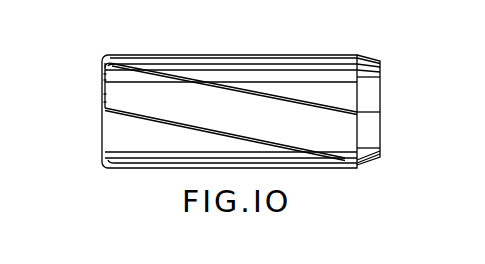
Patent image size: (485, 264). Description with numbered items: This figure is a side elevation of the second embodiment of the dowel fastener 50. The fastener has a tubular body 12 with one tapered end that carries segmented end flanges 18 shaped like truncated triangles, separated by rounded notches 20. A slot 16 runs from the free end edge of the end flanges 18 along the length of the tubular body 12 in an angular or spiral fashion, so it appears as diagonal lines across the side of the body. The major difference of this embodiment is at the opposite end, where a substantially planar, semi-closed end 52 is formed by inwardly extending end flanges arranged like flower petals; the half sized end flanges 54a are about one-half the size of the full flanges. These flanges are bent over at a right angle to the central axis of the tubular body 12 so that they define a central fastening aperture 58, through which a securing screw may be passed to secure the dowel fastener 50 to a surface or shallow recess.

The dowel fastener 50 is at (345, 43).
The tubular body 12 is at (208, 64).
The slot 16 is at (253, 93).
The end flanges 18 is at (370, 123).
The rounded notches 20 is at (367, 62).
The semi-closed end 52 is at (104, 69).
The half sized end flanges 54a is at (103, 77).
The central fastening aperture 58 is at (103, 100).